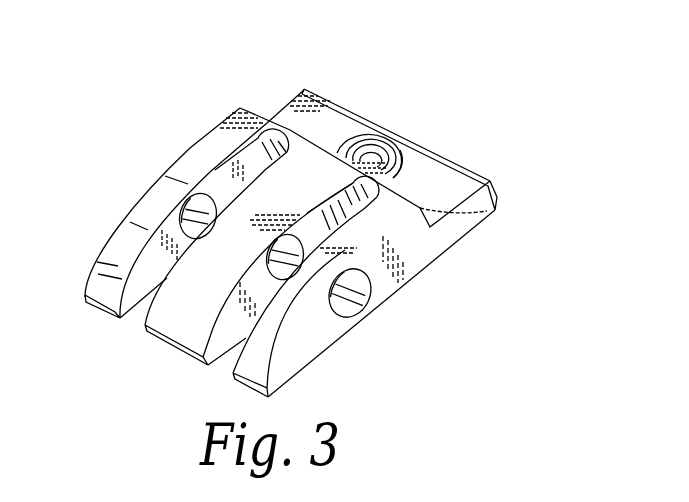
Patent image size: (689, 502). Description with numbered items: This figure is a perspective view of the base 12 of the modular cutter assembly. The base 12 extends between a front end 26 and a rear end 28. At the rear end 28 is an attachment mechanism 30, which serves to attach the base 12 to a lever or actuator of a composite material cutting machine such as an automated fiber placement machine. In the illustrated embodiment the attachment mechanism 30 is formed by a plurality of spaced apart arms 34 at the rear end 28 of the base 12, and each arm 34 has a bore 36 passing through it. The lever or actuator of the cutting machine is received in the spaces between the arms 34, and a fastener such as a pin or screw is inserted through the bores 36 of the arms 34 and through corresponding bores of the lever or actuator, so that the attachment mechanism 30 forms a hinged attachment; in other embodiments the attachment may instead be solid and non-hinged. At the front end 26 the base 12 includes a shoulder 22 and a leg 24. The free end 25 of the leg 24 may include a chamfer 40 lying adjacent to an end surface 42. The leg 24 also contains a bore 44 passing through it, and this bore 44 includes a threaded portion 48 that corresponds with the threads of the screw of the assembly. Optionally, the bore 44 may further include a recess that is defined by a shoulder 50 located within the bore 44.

The base 12 is at (267, 92).
The shoulder 22 is at (494, 208).
The leg 24 is at (433, 188).
The free end 25 is at (405, 150).
The front end 26 is at (484, 200).
The rear end 28 is at (145, 195).
The attachment mechanism 30 is at (168, 128).
The arms 34 is at (178, 274).
The bore 36 is at (213, 185).
The chamfer 40 is at (492, 185).
The end surface 42 is at (495, 196).
The bore 44 is at (375, 176).
The threaded portion 48 is at (372, 142).
The shoulder 50 is at (340, 146).